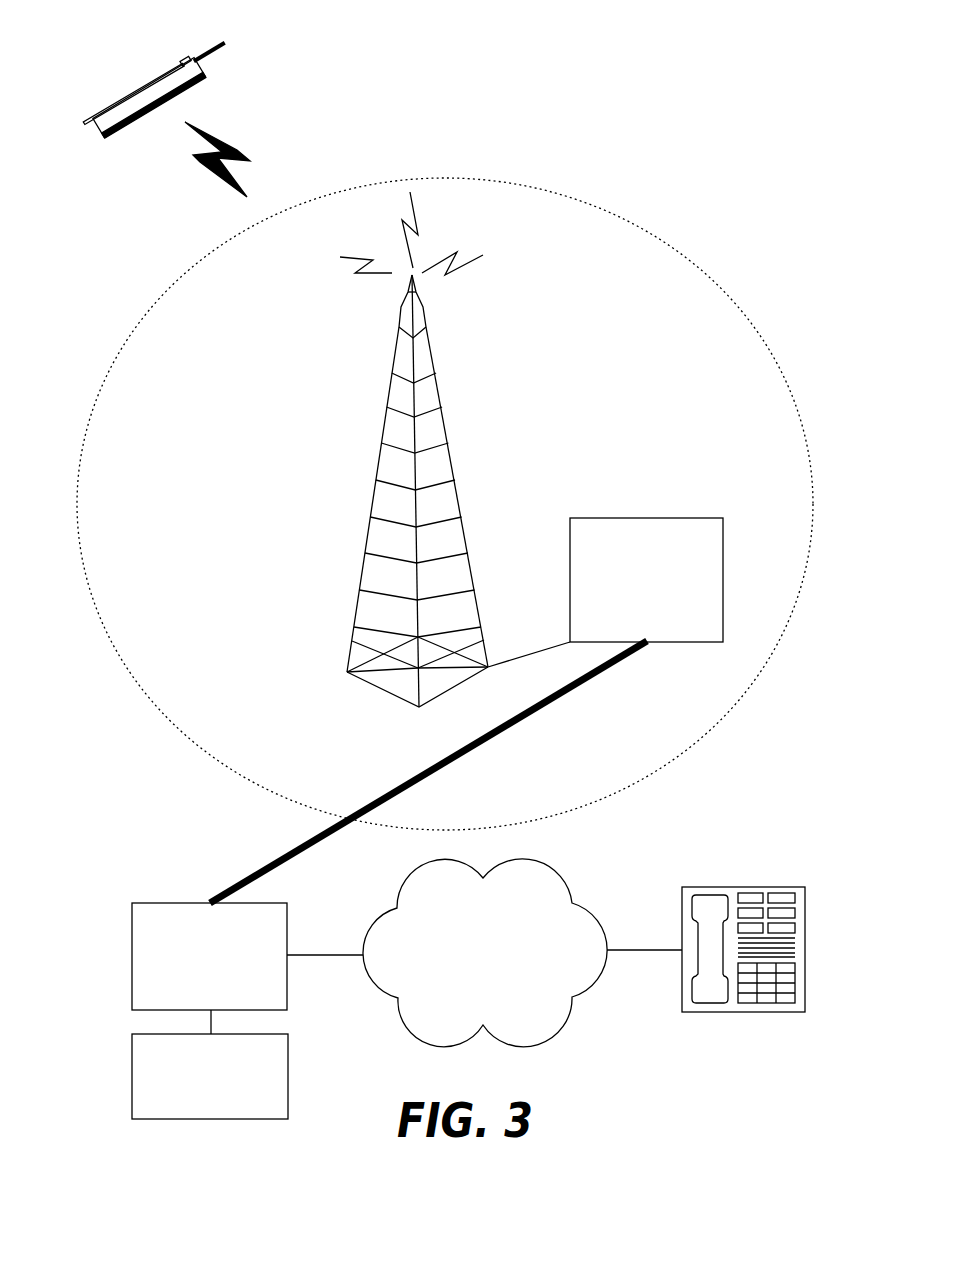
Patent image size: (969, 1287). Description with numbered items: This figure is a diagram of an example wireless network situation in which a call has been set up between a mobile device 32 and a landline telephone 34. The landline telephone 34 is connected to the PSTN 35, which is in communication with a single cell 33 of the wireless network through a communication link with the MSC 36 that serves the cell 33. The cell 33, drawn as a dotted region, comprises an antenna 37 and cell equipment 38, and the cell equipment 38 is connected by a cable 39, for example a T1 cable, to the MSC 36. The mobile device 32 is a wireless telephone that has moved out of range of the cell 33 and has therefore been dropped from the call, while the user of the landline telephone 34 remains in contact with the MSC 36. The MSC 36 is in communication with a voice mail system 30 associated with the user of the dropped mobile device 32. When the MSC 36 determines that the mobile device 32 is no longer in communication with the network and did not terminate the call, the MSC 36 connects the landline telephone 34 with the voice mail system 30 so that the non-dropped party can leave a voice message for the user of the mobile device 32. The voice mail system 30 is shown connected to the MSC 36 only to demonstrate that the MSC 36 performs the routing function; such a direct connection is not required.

The voice mail system 30 is at (198, 1111).
The mobile device 32 is at (197, 46).
The cell 33 is at (532, 188).
The landline telephone 34 is at (697, 887).
The PSTN 35 is at (472, 962).
The MSC 36 is at (198, 979).
The antenna 37 is at (463, 425).
The cell equipment 38 is at (636, 602).
The cable 39 is at (505, 730).